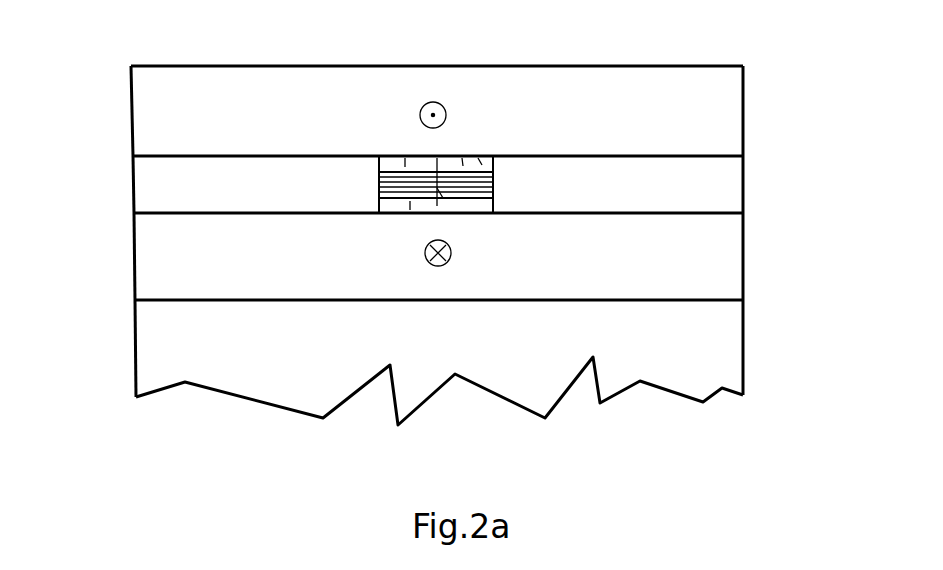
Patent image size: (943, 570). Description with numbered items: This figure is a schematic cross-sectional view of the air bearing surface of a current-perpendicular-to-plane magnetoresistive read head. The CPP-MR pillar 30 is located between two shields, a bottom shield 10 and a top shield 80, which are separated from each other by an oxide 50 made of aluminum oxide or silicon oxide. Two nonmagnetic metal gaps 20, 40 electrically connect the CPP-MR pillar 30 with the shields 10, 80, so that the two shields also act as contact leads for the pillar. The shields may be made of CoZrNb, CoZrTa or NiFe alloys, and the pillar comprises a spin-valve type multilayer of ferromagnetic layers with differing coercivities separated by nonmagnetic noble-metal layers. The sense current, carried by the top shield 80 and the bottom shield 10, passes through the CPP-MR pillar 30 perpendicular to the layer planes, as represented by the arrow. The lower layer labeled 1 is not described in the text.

The substrate 1 is at (683, 347).
The bottom shield 10 is at (687, 260).
The nonmagnetic metal gap 20 is at (405, 156).
The CPP-MR pillar 30 is at (468, 156).
The nonmagnetic metal gap 40 is at (480, 156).
The oxide 50 is at (197, 190).
The top shield 80 is at (703, 124).